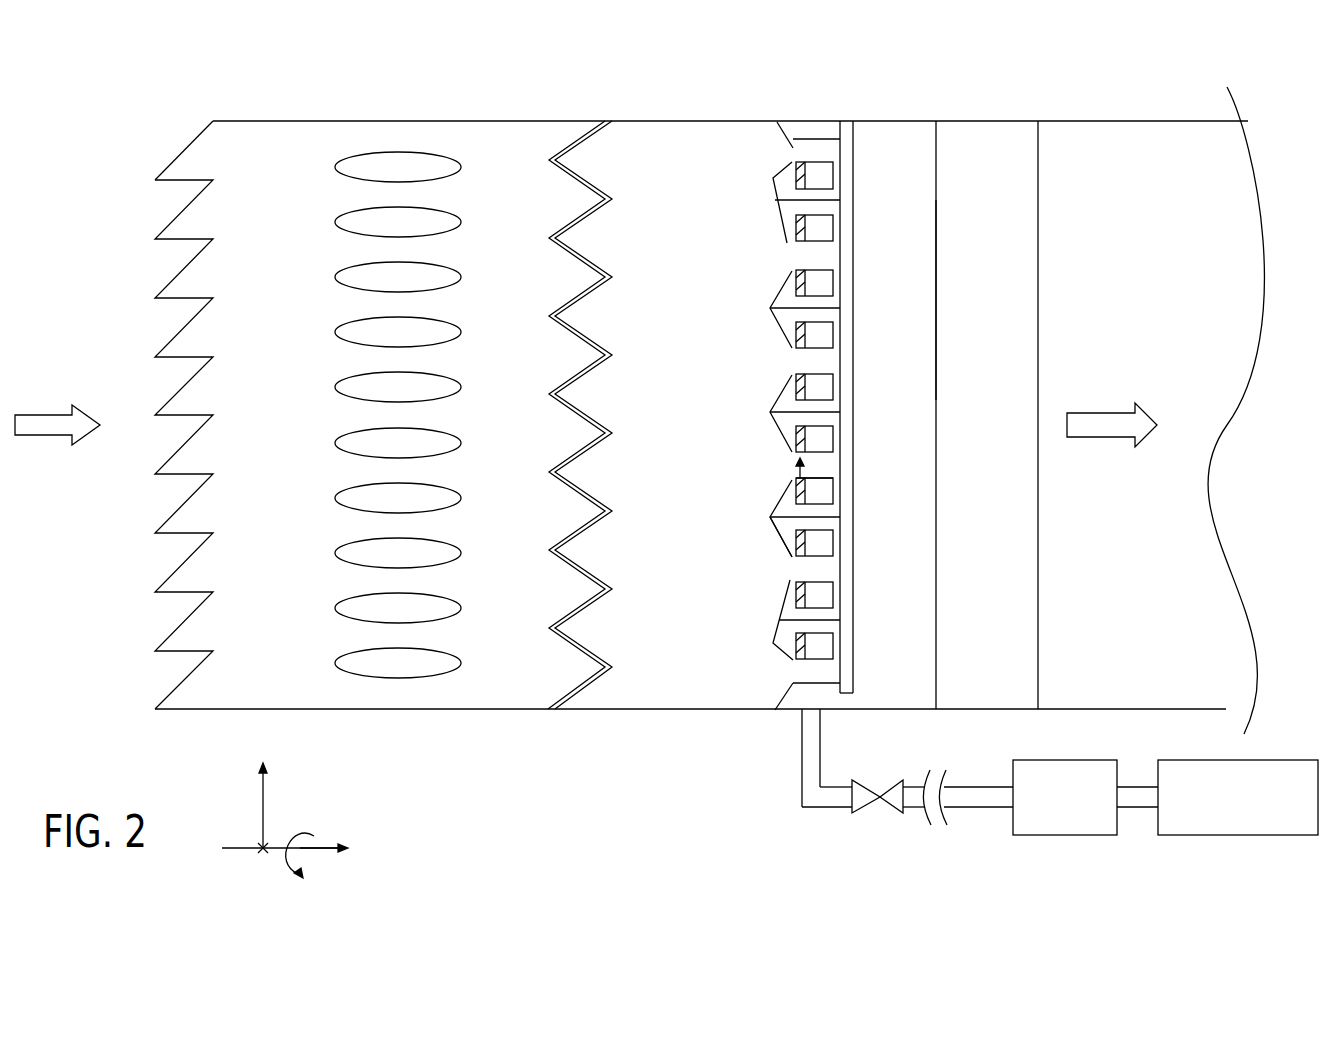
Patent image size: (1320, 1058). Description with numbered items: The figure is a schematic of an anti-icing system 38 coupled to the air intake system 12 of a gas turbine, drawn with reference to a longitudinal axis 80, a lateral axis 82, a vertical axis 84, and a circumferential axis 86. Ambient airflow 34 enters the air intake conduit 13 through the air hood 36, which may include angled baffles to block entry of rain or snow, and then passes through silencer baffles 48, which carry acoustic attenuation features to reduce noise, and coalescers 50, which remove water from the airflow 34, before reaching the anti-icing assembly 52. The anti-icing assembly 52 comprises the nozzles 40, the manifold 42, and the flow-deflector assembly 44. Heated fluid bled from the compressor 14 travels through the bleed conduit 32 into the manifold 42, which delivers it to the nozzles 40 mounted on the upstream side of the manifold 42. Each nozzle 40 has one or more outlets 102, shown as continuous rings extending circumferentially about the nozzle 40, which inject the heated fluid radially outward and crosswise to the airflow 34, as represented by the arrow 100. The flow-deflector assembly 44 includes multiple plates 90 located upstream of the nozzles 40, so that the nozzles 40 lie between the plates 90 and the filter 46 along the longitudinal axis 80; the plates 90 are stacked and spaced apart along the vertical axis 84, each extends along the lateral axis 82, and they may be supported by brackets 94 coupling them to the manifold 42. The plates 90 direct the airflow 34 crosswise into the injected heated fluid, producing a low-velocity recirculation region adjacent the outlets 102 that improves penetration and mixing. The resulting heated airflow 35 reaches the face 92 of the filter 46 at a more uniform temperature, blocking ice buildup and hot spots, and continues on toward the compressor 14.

The air intake system 12 is at (948, 93).
The air intake conduit 13 is at (315, 121).
The compressor 14 is at (1230, 836).
The bleed conduit 32 is at (838, 808).
The airflow 34 is at (40, 405).
The heated airflow 35 is at (1093, 412).
The air hood 36 is at (165, 160).
The anti-icing system 38 is at (165, 105).
The nozzles 40 is at (828, 188).
The manifold 42 is at (853, 178).
The flow-deflector assembly 44 is at (685, 298).
The filter 46 is at (1005, 121).
The silencer baffles 48 is at (396, 150).
The coalescers 50 is at (560, 145).
The anti-icing assembly 52 is at (807, 391).
The longitudinal axis 80 is at (318, 855).
The lateral axis 82 is at (269, 851).
The vertical axis 84 is at (263, 808).
The circumferential axis 86 is at (312, 822).
The plates 90 is at (778, 132).
The face 92 is at (930, 258).
The brackets 94 is at (780, 540).
The arrow 100 is at (795, 462).
The outlets 102 is at (803, 478).